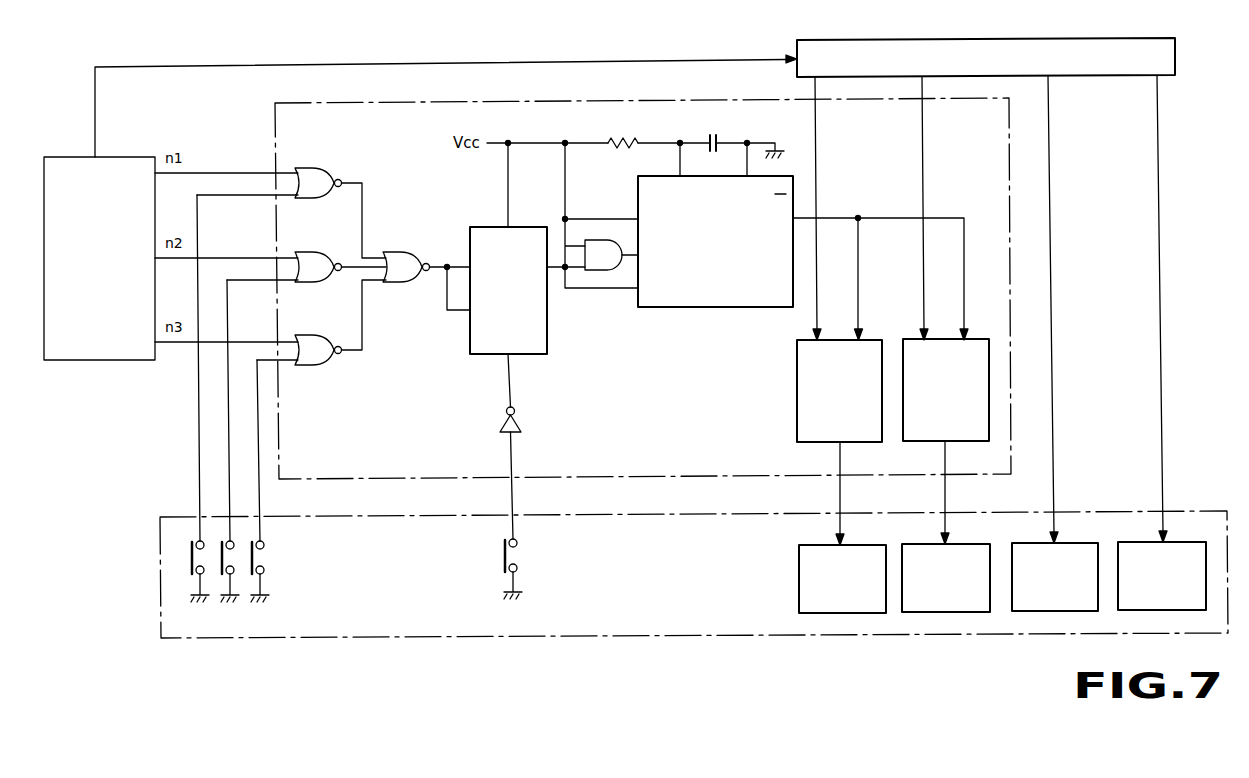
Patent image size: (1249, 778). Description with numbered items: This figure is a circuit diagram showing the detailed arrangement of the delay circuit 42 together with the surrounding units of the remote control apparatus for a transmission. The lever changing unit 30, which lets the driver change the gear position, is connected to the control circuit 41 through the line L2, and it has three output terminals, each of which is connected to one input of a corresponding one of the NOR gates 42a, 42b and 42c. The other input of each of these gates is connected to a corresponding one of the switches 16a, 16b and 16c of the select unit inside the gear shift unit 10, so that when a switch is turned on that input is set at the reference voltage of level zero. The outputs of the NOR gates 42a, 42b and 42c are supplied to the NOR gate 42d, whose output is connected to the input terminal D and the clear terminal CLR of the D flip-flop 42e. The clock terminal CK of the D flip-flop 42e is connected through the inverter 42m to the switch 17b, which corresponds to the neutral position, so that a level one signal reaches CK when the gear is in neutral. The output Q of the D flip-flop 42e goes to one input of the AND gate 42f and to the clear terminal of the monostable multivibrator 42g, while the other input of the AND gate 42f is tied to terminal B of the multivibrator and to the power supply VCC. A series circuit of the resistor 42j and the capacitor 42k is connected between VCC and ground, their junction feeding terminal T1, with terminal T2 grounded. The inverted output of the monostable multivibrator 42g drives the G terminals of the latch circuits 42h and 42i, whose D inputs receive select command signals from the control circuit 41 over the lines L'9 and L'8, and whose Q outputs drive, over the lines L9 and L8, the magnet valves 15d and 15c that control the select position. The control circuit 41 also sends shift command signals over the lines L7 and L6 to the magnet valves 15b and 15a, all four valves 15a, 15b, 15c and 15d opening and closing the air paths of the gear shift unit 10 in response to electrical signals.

The gear shift unit 10 is at (561, 636).
The lever changing unit 30 is at (122, 157).
The control circuit 41 is at (1090, 77).
The delay circuit 42 is at (348, 103).
The NOR gate 42a is at (310, 163).
The NOR gate 42b is at (309, 248).
The NOR gate 42c is at (309, 340).
The NOR gate 42d is at (403, 247).
The D flip-flop 42e is at (547, 342).
The AND gate 42f is at (603, 272).
The monostable multivibrator 42g is at (713, 307).
The latch circuit 42h is at (797, 380).
The latch circuit 42i is at (978, 339).
The resistor 42j is at (632, 135).
The capacitor 42k is at (722, 135).
The inverter 42m is at (523, 426).
The magnet valve 15a is at (1177, 541).
The magnet valve 15b is at (1070, 543).
The magnet valve 15c is at (965, 544).
The magnet valve 15d is at (858, 545).
The switch 16a is at (190, 561).
The switch 16b is at (220, 561).
The switch 16c is at (263, 560).
The switch 17b is at (520, 556).
The line L2 is at (208, 66).
The line L6 is at (1158, 218).
The line L7 is at (1049, 218).
The line L8 is at (946, 493).
The line L9 is at (841, 493).
The line L'8 is at (946, 208).
The line L'9 is at (839, 208).